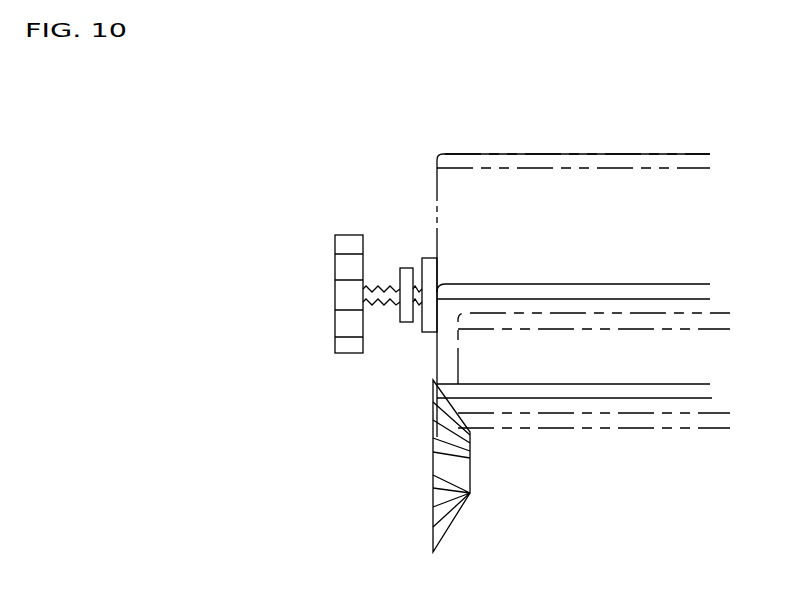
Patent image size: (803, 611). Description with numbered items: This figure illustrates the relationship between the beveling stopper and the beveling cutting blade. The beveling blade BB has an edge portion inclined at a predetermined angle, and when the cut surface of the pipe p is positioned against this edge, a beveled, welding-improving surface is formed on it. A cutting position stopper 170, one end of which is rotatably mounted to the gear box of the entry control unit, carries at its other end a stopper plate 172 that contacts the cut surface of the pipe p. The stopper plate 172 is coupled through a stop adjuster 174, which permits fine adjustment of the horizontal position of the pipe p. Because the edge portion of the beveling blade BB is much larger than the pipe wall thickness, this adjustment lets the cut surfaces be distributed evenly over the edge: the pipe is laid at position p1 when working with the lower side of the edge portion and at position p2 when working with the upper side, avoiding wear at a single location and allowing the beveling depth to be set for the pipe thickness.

The cutting position stopper 170 is at (407, 322).
The stopper plate 172 is at (430, 256).
The stop adjuster 174 is at (340, 327).
The pipe p is at (538, 283).
The position p1 is at (625, 428).
The position p2 is at (485, 152).
The beveling blade BB is at (433, 467).